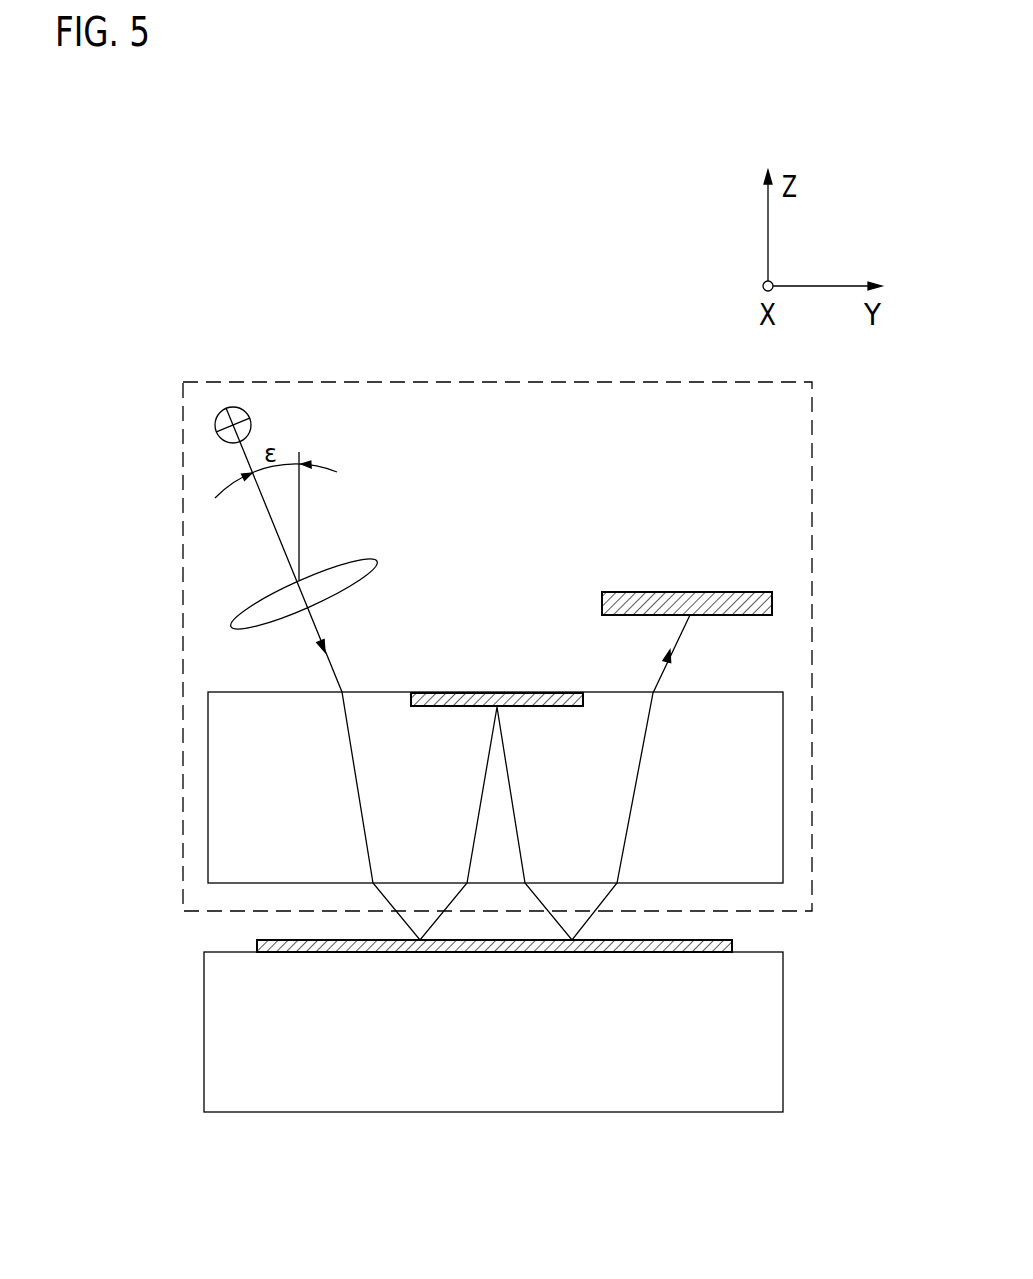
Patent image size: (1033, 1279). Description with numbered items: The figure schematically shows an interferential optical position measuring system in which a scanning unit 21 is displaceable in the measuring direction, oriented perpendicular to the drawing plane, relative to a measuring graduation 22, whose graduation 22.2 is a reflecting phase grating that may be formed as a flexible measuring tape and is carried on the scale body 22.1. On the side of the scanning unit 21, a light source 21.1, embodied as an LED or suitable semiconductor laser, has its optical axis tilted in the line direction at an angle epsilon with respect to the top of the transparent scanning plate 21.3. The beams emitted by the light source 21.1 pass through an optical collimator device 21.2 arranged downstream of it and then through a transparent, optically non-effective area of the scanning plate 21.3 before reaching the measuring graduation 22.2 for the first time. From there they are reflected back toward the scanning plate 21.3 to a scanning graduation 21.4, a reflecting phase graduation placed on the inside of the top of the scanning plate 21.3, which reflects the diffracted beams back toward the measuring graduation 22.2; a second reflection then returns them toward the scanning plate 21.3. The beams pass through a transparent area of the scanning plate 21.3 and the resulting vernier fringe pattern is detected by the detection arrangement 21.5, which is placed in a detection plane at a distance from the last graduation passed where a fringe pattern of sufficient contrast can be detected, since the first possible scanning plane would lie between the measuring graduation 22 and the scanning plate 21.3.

The scanning unit 21 is at (175, 643).
The light source 21.1 is at (233, 407).
The optical collimator device 21.2 is at (335, 580).
The transparent scanning plate 21.3 is at (755, 840).
The scanning graduation 21.4 is at (527, 706).
The detection arrangement 21.5 is at (673, 595).
The measuring graduation 22 is at (190, 1021).
The scale carrier 22.1 is at (760, 1048).
The measuring graduation 22.2 is at (732, 942).